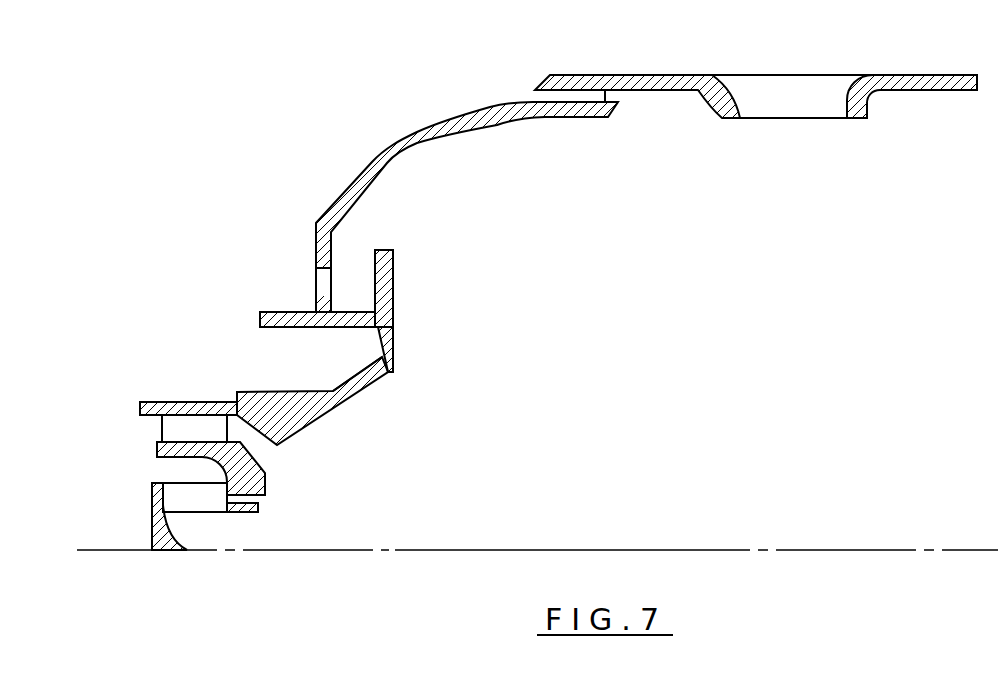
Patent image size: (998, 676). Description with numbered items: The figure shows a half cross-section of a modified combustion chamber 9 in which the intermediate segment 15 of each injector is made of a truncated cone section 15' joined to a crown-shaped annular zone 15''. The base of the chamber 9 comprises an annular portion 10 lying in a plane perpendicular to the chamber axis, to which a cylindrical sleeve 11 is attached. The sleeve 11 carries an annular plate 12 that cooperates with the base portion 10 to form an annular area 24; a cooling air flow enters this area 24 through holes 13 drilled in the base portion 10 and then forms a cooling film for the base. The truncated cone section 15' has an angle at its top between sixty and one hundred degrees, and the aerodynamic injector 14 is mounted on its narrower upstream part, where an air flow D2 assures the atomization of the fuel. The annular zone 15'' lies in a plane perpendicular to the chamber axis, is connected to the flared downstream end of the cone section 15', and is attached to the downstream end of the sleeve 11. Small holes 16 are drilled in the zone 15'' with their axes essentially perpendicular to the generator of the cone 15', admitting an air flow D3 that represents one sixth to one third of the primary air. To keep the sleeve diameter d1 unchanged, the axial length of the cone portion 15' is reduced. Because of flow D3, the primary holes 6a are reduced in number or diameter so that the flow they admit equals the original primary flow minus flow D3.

The primary holes 6a is at (825, 118).
The chamber 9 is at (322, 161).
The annular portion of the chamber base 10 is at (315, 243).
The cylindrical sleeve 11 is at (260, 315).
The annular plate 12 is at (395, 258).
The holes in the base portion 13 is at (317, 268).
The injector 14 is at (157, 530).
The intermediate segment 15 is at (292, 421).
The truncated cone section 15' is at (357, 406).
The annular zone (crown) 15'' is at (419, 340).
The holes 16 is at (395, 352).
The annular area 24 is at (348, 268).
The diameter of sleeve d1 is at (362, 260).
The air flow D2 is at (290, 462).
The air flow D3 is at (406, 381).